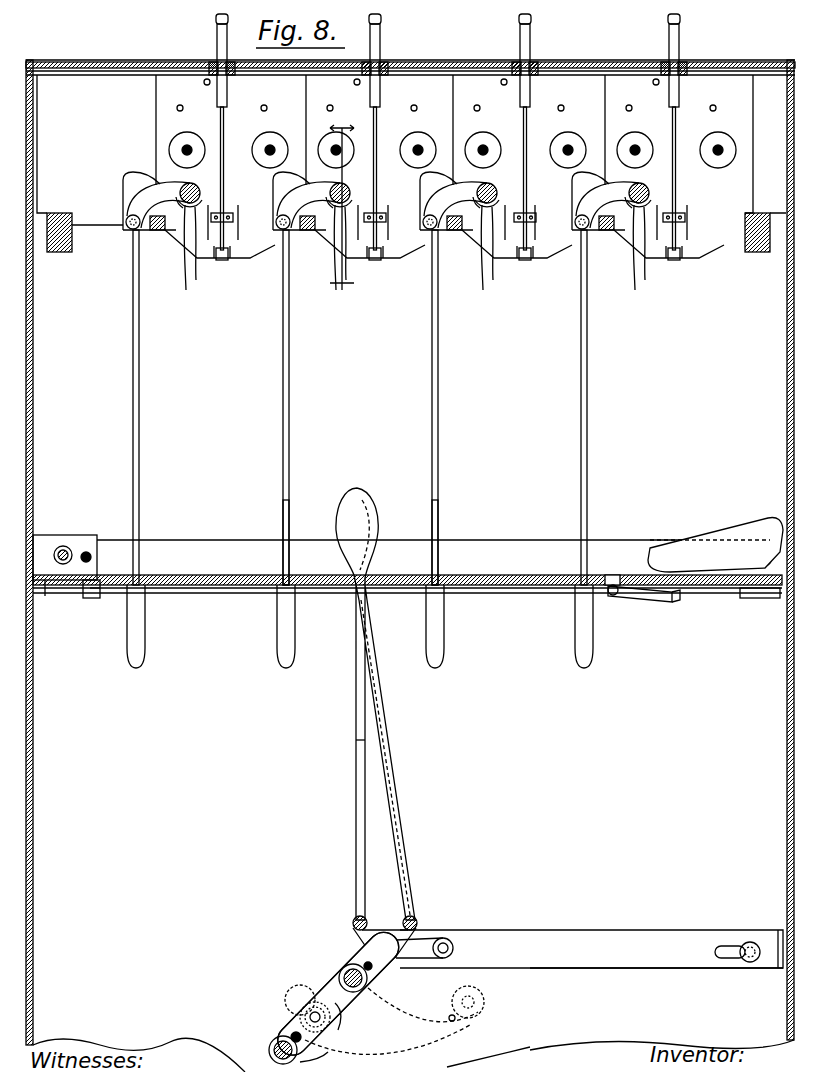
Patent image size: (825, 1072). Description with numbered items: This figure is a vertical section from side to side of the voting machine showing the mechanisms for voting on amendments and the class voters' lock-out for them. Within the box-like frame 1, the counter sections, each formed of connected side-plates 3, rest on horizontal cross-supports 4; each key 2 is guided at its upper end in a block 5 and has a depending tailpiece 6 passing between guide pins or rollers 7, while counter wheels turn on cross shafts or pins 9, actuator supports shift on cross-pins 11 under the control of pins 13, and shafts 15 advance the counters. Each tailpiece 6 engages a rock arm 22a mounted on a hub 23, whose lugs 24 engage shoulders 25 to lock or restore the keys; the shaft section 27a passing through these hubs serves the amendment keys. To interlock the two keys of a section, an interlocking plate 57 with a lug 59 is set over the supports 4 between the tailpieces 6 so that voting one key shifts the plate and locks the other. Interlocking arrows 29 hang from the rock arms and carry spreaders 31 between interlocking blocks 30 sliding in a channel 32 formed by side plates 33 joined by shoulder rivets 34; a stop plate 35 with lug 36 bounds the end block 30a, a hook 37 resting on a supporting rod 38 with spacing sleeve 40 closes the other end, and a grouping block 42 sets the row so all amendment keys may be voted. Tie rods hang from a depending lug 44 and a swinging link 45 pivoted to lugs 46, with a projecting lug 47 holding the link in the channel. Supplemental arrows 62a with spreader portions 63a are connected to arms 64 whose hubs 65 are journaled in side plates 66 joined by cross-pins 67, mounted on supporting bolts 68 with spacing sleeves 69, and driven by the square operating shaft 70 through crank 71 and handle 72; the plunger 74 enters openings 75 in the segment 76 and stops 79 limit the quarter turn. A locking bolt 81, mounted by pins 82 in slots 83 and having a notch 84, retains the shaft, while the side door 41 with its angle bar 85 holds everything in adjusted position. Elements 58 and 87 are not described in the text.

The box-like frame 1 is at (38, 255).
The keys 2 is at (520, 44).
The side-plates 3 is at (405, 130).
The horizontal cross-supports 4 is at (408, 240).
The block 5 is at (214, 62).
The tailpiece 6 is at (448, 268).
The guide pins or rollers 7 is at (448, 207).
The cross shafts or pins 9 is at (260, 106).
The cross-pins 11 is at (255, 140).
The pins 13 is at (342, 205).
The shafts 15 is at (275, 145).
The rock arms 22a is at (150, 180).
The hub 23 is at (202, 192).
The lugs 24 is at (412, 251).
The shoulders 25 is at (685, 194).
The shaft section 27a is at (682, 170).
The interlocking straps or arrows 29 is at (282, 358).
The interlocking blocks 30 is at (175, 575).
The end block 30a is at (70, 595).
The spreaders 31 is at (146, 614).
The guide or channel 32 is at (445, 560).
The side plates 33 is at (300, 548).
The shoulder rivets 34 is at (92, 555).
The stop plate 35 is at (80, 540).
The lug 36 is at (45, 596).
The hook 37 is at (715, 540).
The supporting rods 38 is at (64, 546).
The spacing sleeve 40 is at (58, 548).
The side door 41 is at (787, 665).
The grouping block 42 is at (758, 598).
The depending lug 44 is at (100, 592).
The swinging link or dog 45 is at (655, 600).
The depending lugs 46 is at (610, 594).
The projecting lug 47 is at (680, 598).
The interlocking plate 57 is at (444, 252).
The brackets 58 is at (133, 186).
The lug 59 is at (445, 273).
The supplemental arrows 62a is at (385, 768).
The spreader portions 63a is at (362, 492).
The arms 64 is at (386, 930).
The hub portion 65 is at (448, 955).
The side plates 66 is at (380, 990).
The shouldered cross-pins 67 is at (362, 964).
The supporting bolts 68 is at (364, 984).
The spacing sleeves 69 is at (338, 974).
The square operating shaft 70 is at (396, 940).
The crank 71 is at (340, 1010).
The handle 72 is at (317, 1061).
The plunger 74 is at (300, 1012).
The openings 75 is at (470, 1020).
The segment 76 is at (455, 1042).
The stops 79 is at (295, 988).
The locking bolt 81 is at (598, 922).
The pins 82 is at (456, 945).
The slots 83 is at (712, 948).
The notch 84 is at (370, 945).
The angle bar 85 is at (440, 938).
The ring 87 is at (750, 942).